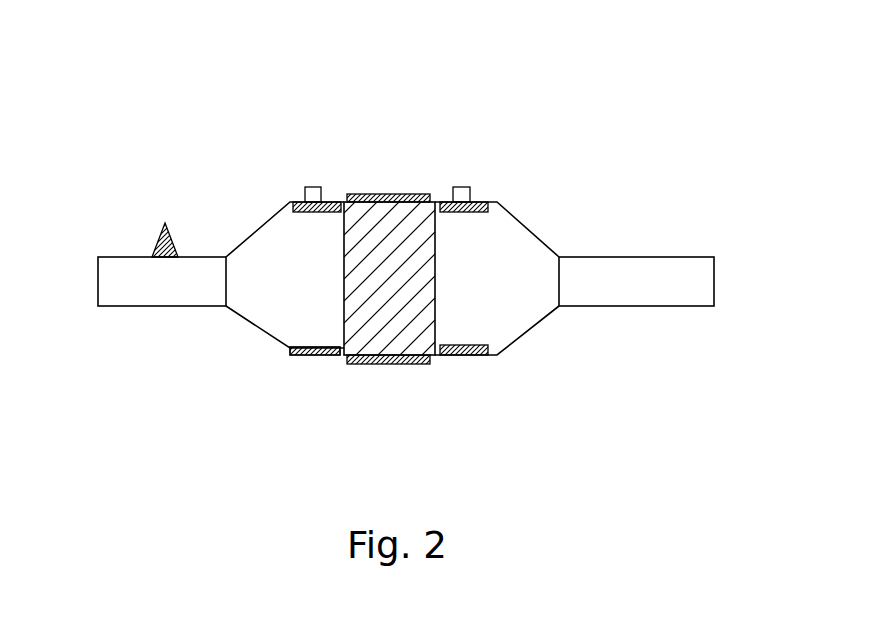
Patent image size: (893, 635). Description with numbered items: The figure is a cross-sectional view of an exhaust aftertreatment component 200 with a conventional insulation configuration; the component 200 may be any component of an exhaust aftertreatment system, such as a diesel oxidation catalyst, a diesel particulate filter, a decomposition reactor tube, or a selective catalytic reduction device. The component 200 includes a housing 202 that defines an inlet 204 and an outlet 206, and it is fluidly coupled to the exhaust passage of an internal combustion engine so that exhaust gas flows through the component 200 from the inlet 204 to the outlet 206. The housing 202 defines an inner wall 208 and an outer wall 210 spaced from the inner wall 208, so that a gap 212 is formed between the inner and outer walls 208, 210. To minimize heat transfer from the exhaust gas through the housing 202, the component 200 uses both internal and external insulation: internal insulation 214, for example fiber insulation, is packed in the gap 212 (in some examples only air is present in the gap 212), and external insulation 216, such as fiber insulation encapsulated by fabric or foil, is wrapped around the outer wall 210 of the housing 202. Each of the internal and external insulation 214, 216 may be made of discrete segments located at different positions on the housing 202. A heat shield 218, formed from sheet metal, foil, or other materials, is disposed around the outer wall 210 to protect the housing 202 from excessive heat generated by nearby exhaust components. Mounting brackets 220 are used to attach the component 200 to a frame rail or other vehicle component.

The exhaust aftertreatment component 200 is at (427, 86).
The housing 202 is at (527, 228).
The inlet 204 is at (98, 257).
The outlet 206 is at (715, 257).
The inner wall 208 is at (301, 346).
The outer wall 210 is at (313, 356).
The gap 212 is at (284, 343).
The internal insulation 214 is at (308, 356).
The external insulation 216 is at (410, 364).
The heat shield 218 is at (388, 193).
The mounting brackets 220 is at (312, 186).